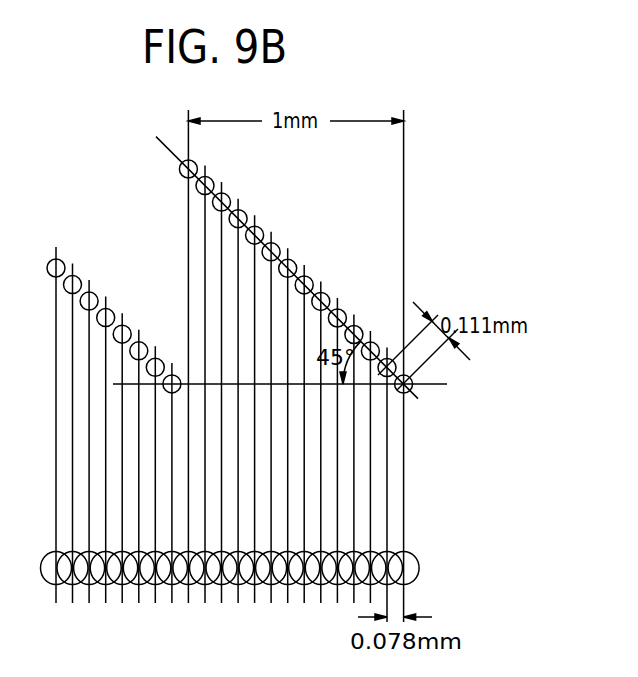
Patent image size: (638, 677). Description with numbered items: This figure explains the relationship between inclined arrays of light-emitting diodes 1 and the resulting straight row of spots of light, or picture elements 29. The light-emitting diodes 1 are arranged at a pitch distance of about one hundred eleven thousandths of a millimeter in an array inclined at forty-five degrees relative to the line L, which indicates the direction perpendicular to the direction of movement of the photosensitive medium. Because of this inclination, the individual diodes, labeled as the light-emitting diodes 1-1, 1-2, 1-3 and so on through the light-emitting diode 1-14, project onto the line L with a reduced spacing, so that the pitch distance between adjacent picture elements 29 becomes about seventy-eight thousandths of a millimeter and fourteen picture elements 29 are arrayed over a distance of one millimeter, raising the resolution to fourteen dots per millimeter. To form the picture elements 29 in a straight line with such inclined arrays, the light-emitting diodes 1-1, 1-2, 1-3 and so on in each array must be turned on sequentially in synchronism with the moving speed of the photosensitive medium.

The light-emitting diodes 1 is at (329, 276).
The first light-emitting diode 1-1 is at (197, 162).
The second light-emitting diode 1-2 is at (213, 180).
The third light-emitting diode 1-3 is at (231, 196).
The fourteenth light-emitting diode 1-14 is at (410, 392).
The picture elements 29 is at (419, 564).
The line L is at (440, 384).